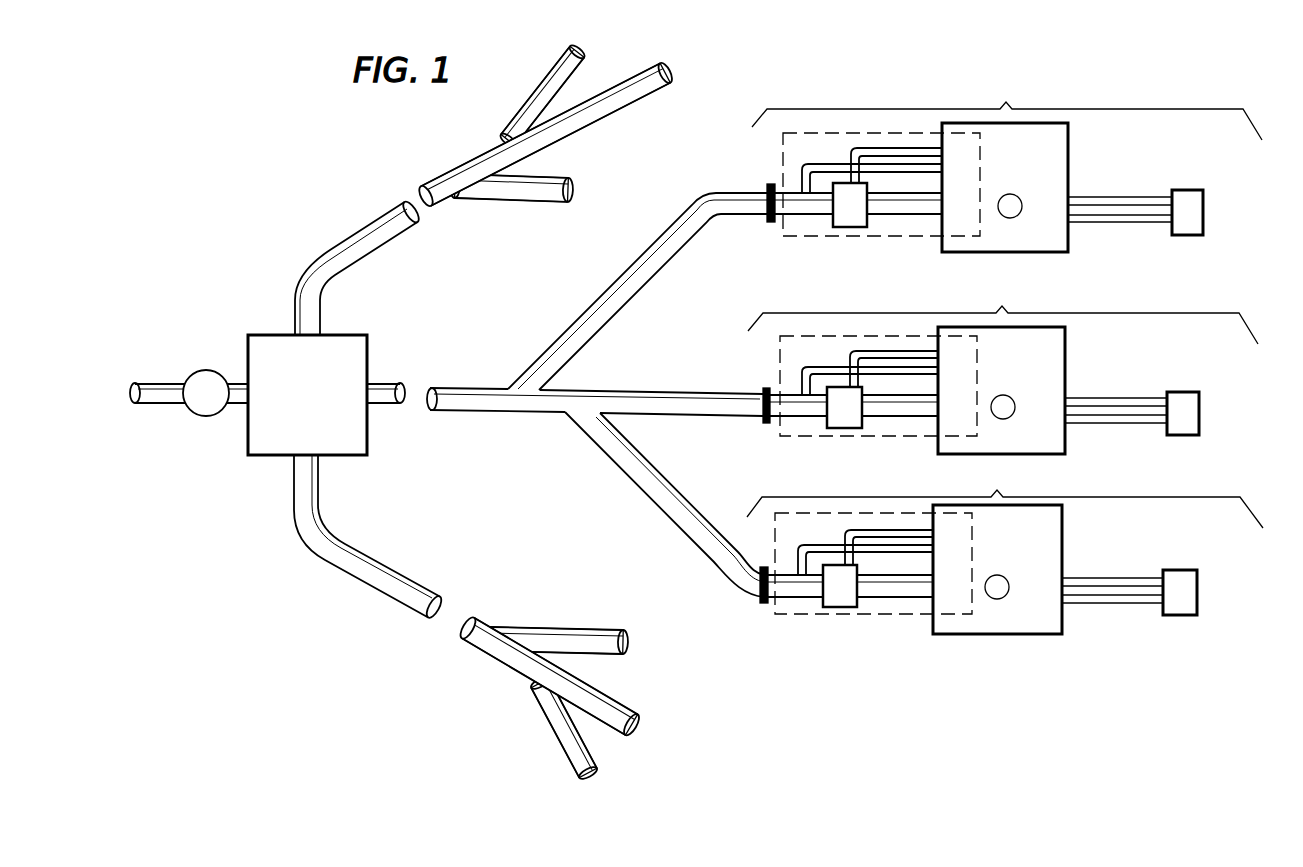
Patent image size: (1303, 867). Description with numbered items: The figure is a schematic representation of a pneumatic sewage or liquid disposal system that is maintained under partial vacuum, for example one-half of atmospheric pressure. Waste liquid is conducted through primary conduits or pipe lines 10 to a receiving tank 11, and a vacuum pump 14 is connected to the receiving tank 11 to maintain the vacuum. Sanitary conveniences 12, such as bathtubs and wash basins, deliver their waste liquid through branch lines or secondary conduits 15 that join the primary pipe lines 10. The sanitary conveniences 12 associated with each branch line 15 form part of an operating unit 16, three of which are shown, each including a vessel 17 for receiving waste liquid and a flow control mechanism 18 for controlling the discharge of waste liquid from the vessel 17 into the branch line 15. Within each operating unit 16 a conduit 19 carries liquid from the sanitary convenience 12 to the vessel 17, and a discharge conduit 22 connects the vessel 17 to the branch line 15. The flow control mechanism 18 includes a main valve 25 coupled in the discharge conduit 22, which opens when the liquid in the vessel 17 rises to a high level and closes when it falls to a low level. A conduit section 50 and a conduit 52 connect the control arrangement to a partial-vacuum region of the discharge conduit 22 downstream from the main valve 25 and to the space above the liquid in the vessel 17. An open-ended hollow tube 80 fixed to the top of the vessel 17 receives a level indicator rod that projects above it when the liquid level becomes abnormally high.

The primary conduit 10 is at (391, 386).
The receiving tank 11 is at (270, 342).
The sanitary convenience 12 is at (1199, 207).
The vacuum pump 14 is at (200, 421).
The branch line 15 is at (527, 103).
The operating unit 16 is at (1005, 302).
The vessel 17 is at (1060, 152).
The flow control mechanism 18 is at (779, 151).
The conduit 19 is at (1122, 219).
The discharge conduit 22 is at (912, 216).
The main valve 25 is at (833, 226).
The conduit section 50 is at (918, 148).
The conduit 52 is at (828, 165).
The hollow tube 80 is at (1019, 214).